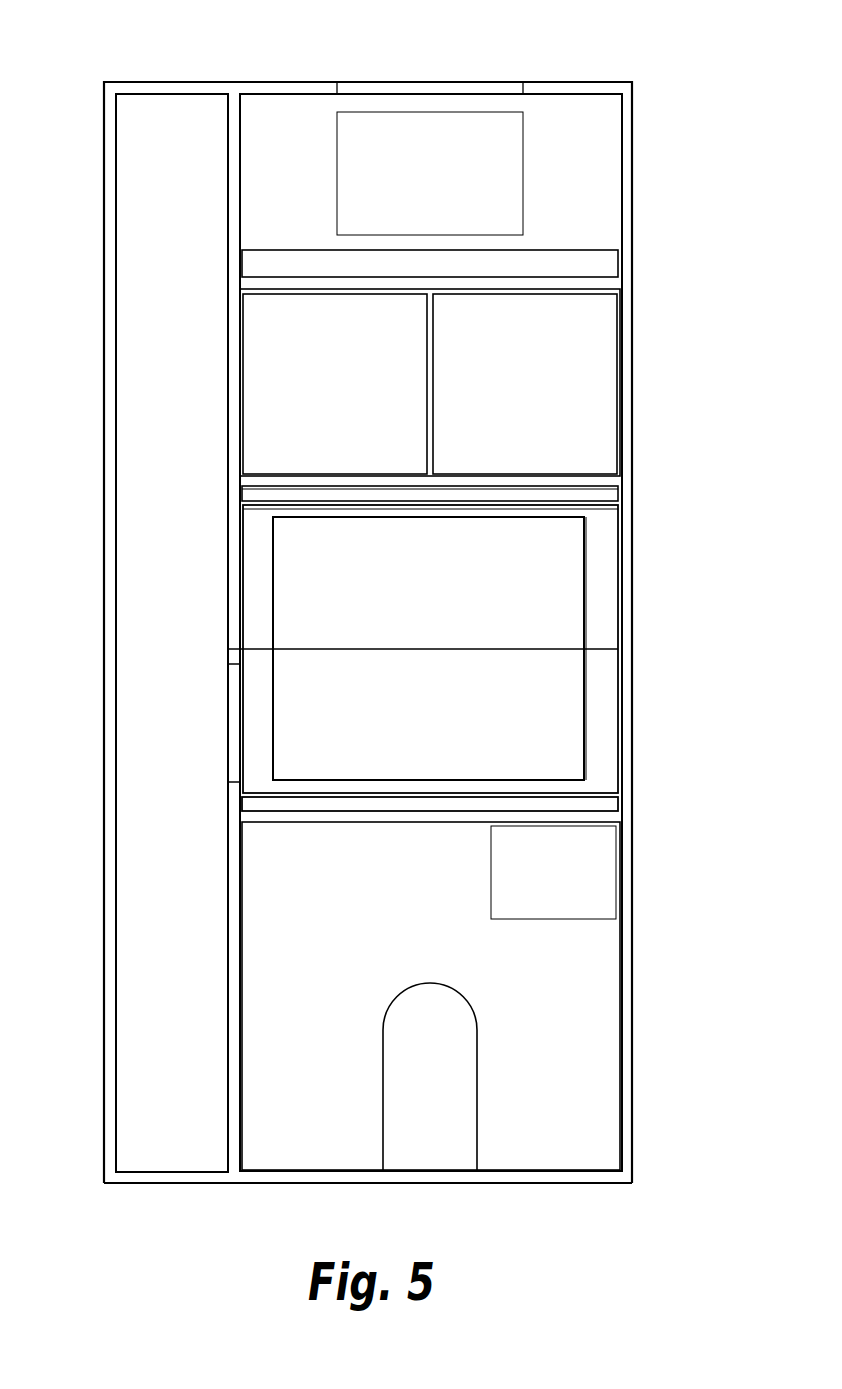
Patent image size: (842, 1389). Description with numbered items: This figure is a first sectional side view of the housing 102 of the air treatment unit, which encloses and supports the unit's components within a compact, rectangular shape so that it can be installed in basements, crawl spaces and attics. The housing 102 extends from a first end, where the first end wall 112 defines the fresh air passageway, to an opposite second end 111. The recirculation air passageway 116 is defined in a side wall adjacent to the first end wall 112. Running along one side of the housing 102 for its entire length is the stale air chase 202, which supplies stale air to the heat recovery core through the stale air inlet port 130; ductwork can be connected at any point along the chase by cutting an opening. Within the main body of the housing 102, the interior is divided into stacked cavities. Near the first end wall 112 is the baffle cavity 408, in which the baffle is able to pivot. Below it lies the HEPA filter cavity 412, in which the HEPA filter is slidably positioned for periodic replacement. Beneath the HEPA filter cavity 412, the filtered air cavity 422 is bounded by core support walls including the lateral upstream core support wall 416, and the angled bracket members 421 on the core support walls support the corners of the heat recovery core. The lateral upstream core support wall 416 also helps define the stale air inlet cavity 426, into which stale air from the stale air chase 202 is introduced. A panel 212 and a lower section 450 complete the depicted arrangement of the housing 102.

The housing 102 is at (648, 253).
The second end 111 is at (458, 1200).
The first end wall 112 is at (390, 65).
The recirculation air passageway 116 is at (505, 158).
The stale air inlet port 130 is at (212, 715).
The stale air chase 202 is at (168, 117).
The inner panel 212 is at (568, 742).
The baffle cavity 408 is at (595, 185).
The HEPA filter cavity 412 is at (592, 395).
The lateral upstream core support wall 416 is at (605, 648).
The angled bracket members 421 is at (585, 512).
The filtered air cavity 422 is at (612, 575).
The stale air inlet cavity 426 is at (618, 695).
The lower section 450 is at (590, 1040).